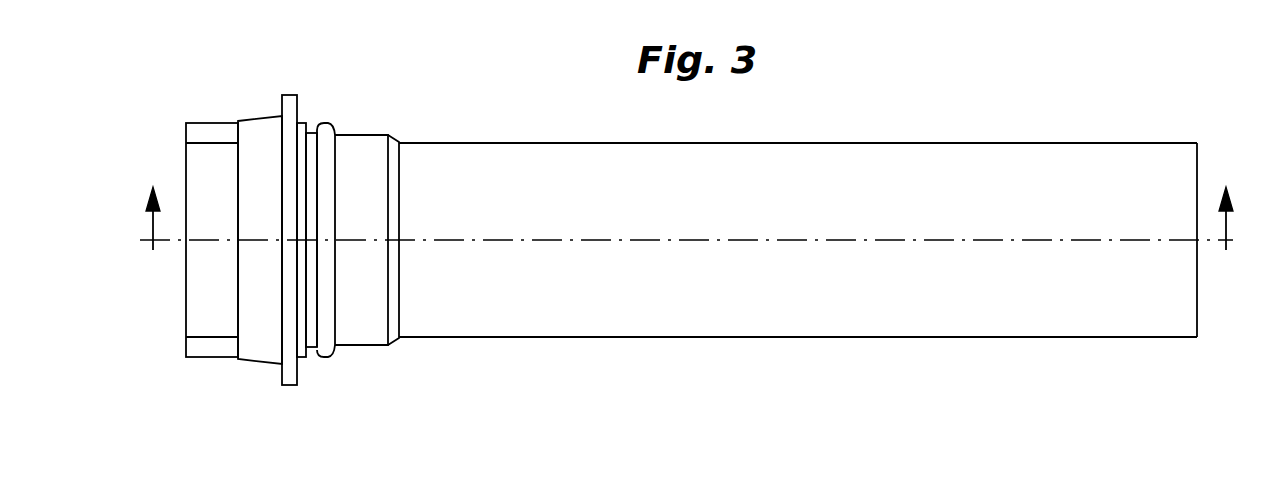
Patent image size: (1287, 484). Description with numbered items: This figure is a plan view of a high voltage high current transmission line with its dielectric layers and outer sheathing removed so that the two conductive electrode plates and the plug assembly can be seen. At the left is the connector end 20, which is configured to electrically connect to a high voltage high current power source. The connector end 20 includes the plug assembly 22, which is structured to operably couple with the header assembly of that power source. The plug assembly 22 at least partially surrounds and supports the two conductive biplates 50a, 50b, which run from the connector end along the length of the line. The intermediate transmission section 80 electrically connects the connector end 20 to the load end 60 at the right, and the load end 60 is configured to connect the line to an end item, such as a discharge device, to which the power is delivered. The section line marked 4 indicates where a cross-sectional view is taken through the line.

The section line 4- 4 is at (689, 206).
The connector end 20 is at (292, 239).
The plug assembly 22 is at (253, 348).
The conductive biplate 50a is at (834, 271).
The conductive biplate 50b is at (834, 271).
The load end 60 is at (1207, 360).
The intermediate transmission section 80 is at (770, 358).